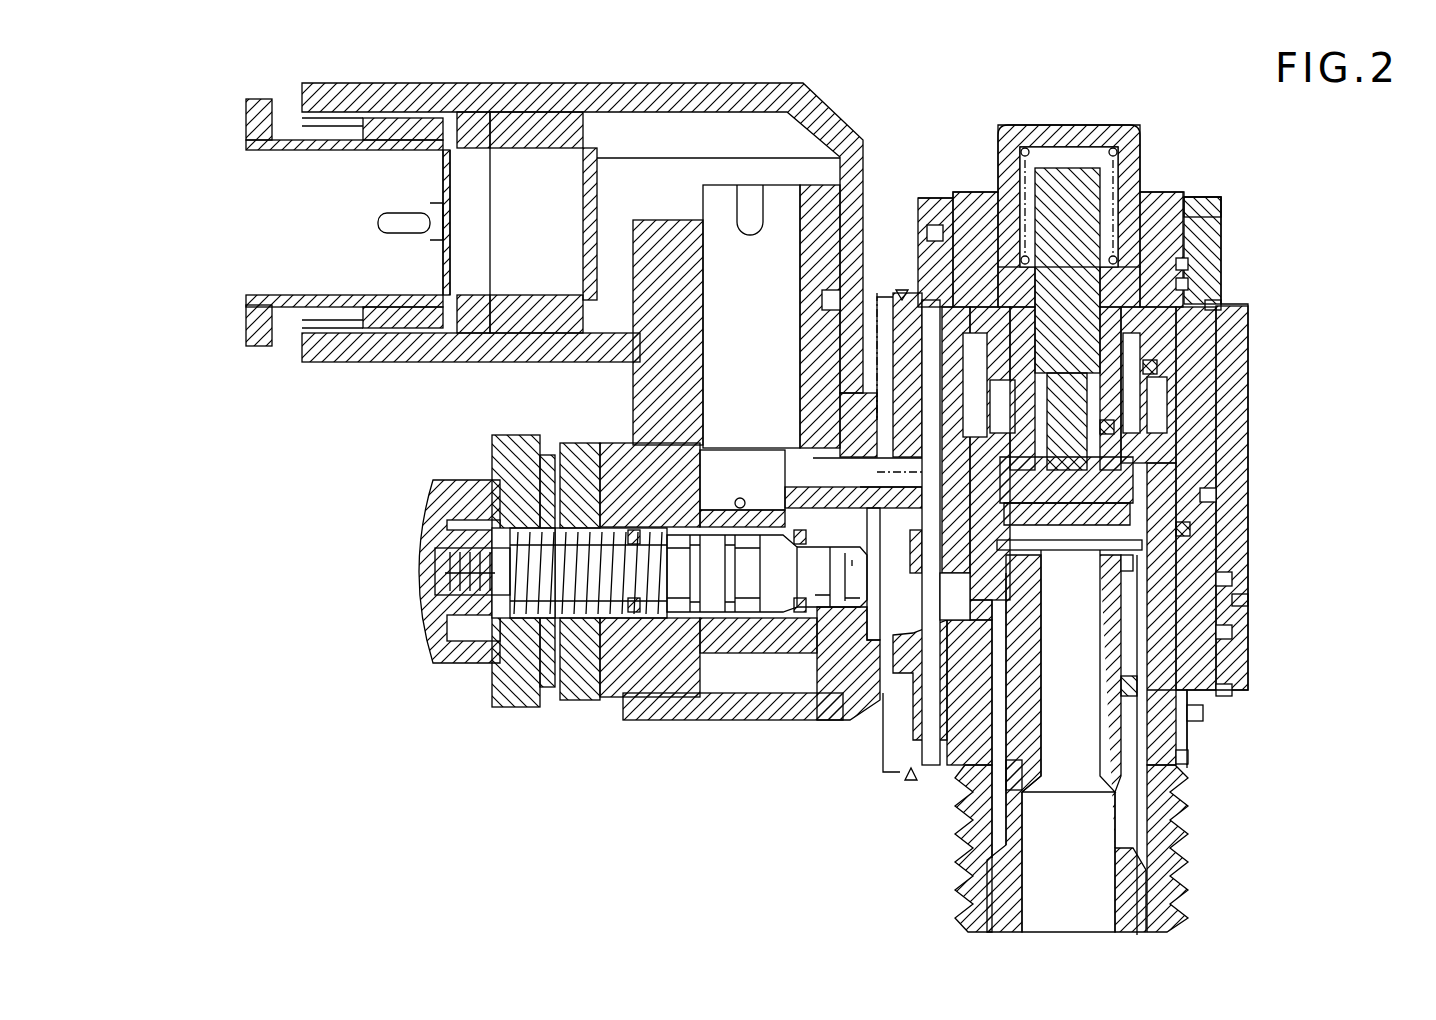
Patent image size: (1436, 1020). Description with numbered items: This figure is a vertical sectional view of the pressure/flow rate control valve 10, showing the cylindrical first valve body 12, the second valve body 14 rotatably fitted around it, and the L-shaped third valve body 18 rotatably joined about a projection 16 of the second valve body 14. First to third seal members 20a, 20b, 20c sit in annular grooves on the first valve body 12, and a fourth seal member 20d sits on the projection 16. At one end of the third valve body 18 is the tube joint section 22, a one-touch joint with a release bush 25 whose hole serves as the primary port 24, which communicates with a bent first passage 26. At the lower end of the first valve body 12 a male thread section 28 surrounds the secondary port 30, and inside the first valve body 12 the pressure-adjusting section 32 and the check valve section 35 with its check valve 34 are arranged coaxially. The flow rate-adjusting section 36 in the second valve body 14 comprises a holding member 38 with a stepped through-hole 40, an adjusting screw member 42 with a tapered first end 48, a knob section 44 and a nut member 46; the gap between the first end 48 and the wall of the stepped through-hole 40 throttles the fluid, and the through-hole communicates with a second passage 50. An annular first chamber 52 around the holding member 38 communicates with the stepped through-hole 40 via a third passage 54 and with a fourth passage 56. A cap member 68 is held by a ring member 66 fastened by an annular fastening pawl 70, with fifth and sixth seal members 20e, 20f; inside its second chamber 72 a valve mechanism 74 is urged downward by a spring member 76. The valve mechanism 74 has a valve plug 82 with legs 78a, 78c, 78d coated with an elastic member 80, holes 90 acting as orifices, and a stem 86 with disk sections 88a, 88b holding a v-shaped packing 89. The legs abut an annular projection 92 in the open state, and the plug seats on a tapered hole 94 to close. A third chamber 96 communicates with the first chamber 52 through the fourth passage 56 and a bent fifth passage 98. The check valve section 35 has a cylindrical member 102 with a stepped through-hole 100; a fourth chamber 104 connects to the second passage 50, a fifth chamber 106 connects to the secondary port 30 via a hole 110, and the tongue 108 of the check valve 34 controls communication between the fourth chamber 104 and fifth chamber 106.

The pressure/flow rate control valve 10 is at (1303, 148).
The first valve body 12 is at (1221, 205).
The second valve body 14 is at (750, 715).
The projection 16 is at (813, 195).
The third valve body 18 is at (622, 95).
The first seal member 20a is at (1222, 335).
The second seal member 20b is at (1230, 580).
The third seal member 20c is at (1195, 715).
The fourth seal member 20d is at (825, 305).
The fifth seal member 20e is at (935, 233).
The sixth seal member 20f is at (1215, 495).
The tube joint section 22 is at (430, 112).
The primary port 24 is at (268, 282).
The release bush 25 is at (262, 104).
The first passage 26 is at (762, 288).
The male thread section 28 is at (1195, 828).
The secondary port 30 is at (972, 887).
The pressure-adjusting section 32 is at (1218, 308).
The check valve 34 is at (1183, 760).
The check valve section 35 is at (1135, 685).
The flow rate-adjusting section 36 is at (708, 625).
The holding member 38 is at (612, 690).
The stepped through-hole 40 is at (634, 612).
The adjusting screw member 42 is at (593, 590).
The knob section 44 is at (437, 588).
The nut member 46 is at (517, 693).
The first end 48 is at (837, 607).
The second passage 50 is at (927, 625).
The first chamber 52 is at (705, 468).
The third passage 54 is at (720, 498).
The fourth passage 56 is at (838, 455).
The ring member 66 is at (1163, 203).
The cap member 68 is at (1112, 142).
The fastening pawl 70 is at (955, 237).
The second chamber 72 is at (1052, 160).
The valve mechanism 74 is at (1120, 400).
The spring member 76 is at (1013, 150).
The leg 78a is at (1050, 520).
The leg 78c is at (1125, 563).
The leg 78d is at (1063, 440).
The elastic member 80 is at (1135, 452).
The valve plug 82 is at (1185, 530).
The stem 86 is at (1120, 165).
The disk section 88a is at (1213, 217).
The disk section 88b is at (1185, 285).
The packing 89 is at (1185, 265).
The holes 90 is at (1087, 596).
The annular projection 92 is at (1245, 600).
The tapered hole 94 is at (1112, 428).
The third chamber 96 is at (1160, 368).
The fifth passage 98 is at (920, 270).
The stepped through-hole 100 is at (1096, 763).
The cylindrical member 102 is at (1150, 880).
The fourth chamber 104 is at (1230, 632).
The fifth chamber 106 is at (1150, 811).
The tongue 108 is at (1230, 690).
The hole 110 is at (1015, 845).